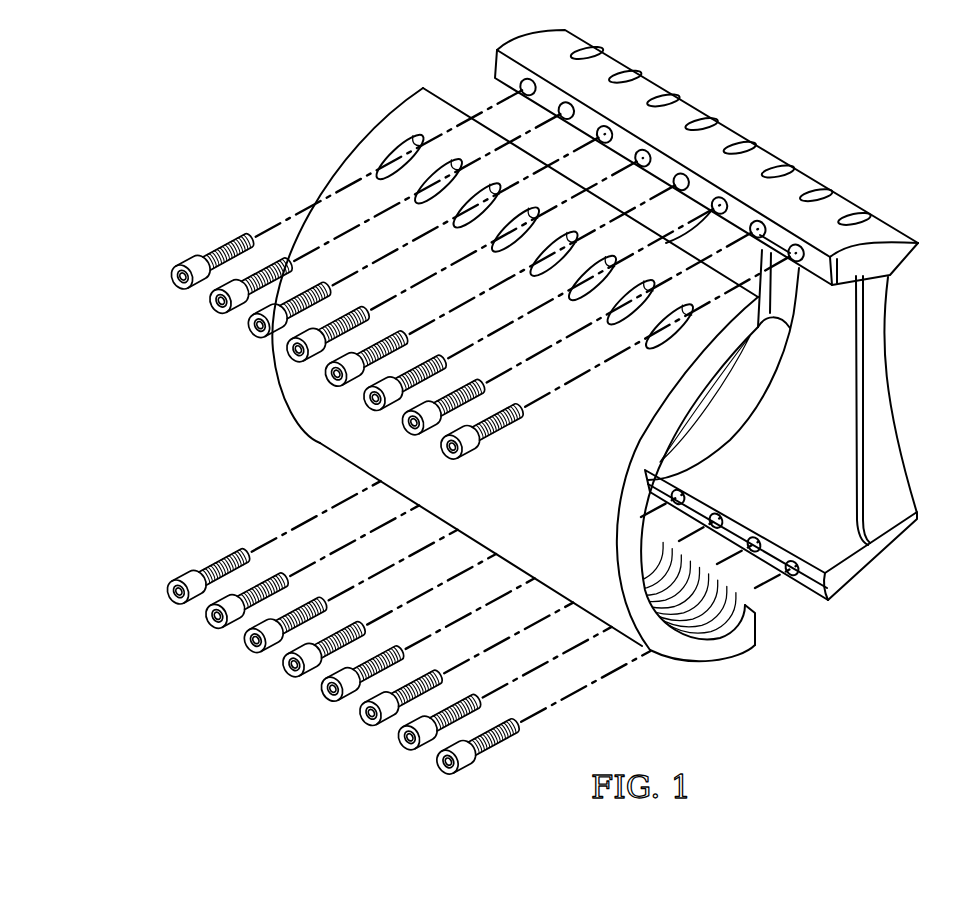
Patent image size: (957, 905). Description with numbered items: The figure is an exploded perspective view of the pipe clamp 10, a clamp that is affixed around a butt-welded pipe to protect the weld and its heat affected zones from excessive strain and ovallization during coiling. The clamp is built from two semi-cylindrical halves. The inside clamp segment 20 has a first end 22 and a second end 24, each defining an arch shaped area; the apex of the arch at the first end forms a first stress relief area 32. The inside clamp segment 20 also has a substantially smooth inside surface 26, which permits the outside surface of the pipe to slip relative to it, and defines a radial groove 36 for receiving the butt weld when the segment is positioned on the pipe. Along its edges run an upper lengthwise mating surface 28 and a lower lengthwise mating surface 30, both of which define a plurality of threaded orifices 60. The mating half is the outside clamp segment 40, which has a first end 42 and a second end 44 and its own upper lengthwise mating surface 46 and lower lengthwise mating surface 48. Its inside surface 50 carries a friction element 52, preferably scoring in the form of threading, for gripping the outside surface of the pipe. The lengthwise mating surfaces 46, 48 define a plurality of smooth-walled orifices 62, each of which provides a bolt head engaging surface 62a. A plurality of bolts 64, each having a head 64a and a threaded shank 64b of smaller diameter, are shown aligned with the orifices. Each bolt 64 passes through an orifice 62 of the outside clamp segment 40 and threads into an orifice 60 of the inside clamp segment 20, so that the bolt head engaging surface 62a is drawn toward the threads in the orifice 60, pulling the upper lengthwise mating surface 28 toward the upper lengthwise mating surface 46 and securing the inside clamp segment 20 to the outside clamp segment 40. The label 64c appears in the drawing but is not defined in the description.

The pipe clamp 10 is at (892, 80).
The inside clamp segment 20 is at (728, 92).
The first end 22 is at (900, 613).
The second end 24 is at (453, 67).
The inside surface 26 is at (808, 415).
The upper lengthwise mating surface 28 is at (778, 242).
The lower lengthwise mating surface 30 is at (773, 548).
The first stress relief area 32 is at (887, 405).
The radial groove 36 is at (713, 438).
The outside clamp segment 40 is at (283, 413).
The first end 42 is at (753, 658).
The second end 44 is at (293, 145).
The upper lengthwise mating surface 46 is at (787, 337).
The lower lengthwise mating surface 48 is at (758, 627).
The inside surface 50 is at (729, 600).
The friction element 52 is at (678, 549).
The orifices 60 is at (567, 104).
The orifices 62 is at (478, 200).
The bolt head engaging surface 62a is at (398, 150).
The bolts 64 is at (181, 263).
The head 64a is at (210, 291).
The shank 64b is at (227, 241).
The socket 64c is at (180, 288).